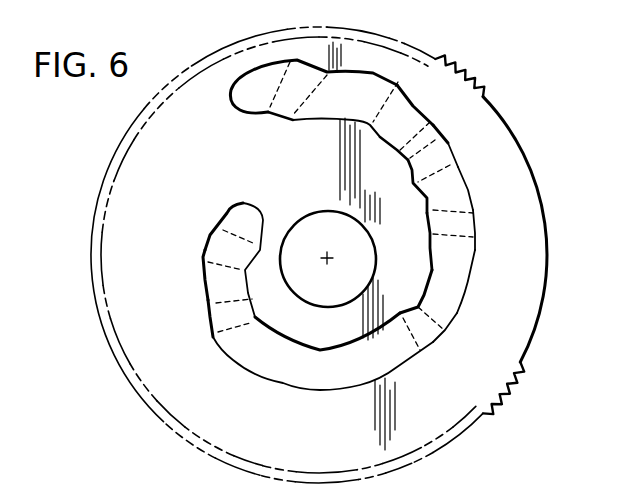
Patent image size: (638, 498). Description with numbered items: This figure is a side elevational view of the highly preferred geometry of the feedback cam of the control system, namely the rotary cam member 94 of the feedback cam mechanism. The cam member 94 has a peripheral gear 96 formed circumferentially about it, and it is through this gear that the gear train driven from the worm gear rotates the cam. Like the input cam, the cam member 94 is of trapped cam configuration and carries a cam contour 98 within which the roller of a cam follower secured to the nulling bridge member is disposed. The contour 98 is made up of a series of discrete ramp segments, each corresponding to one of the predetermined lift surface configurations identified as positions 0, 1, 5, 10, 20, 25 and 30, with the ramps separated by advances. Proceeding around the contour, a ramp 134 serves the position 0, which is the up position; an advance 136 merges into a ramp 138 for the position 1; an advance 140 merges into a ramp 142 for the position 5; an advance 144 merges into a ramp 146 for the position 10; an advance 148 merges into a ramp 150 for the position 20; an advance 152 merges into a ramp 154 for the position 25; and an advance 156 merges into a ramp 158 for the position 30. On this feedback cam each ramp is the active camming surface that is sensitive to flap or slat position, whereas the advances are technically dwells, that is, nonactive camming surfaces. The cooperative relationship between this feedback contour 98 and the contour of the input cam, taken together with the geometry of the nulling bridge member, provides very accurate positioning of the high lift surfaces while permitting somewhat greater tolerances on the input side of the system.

The cam member 94 is at (541, 207).
The peripheral gear 96 is at (485, 97).
The cam contour 98 is at (380, 72).
The ramp 134 is at (213, 242).
The advance 136 is at (210, 285).
The ramp 138 is at (213, 317).
The advance 140 is at (263, 370).
The ramp 142 is at (437, 343).
The advance 144 is at (463, 283).
The ramp 146 is at (472, 229).
The advance 148 is at (467, 193).
The ramp 150 is at (450, 147).
The advance 152 is at (433, 127).
The ramp 154 is at (413, 104).
The advance 156 is at (333, 115).
The ramp 158 is at (282, 110).
The "0" position 0 is at (235, 260).
The "1" position 1 is at (234, 315).
The "5" position 5 is at (421, 310).
The "10" position 10 is at (450, 240).
The "20" position 20 is at (429, 176).
The "25" position 25 is at (401, 121).
The "30" position 30 is at (313, 88).